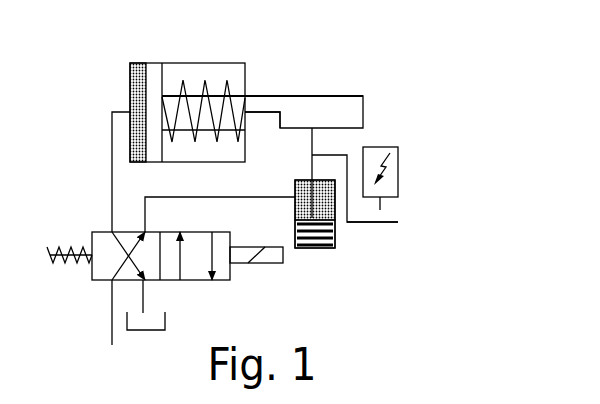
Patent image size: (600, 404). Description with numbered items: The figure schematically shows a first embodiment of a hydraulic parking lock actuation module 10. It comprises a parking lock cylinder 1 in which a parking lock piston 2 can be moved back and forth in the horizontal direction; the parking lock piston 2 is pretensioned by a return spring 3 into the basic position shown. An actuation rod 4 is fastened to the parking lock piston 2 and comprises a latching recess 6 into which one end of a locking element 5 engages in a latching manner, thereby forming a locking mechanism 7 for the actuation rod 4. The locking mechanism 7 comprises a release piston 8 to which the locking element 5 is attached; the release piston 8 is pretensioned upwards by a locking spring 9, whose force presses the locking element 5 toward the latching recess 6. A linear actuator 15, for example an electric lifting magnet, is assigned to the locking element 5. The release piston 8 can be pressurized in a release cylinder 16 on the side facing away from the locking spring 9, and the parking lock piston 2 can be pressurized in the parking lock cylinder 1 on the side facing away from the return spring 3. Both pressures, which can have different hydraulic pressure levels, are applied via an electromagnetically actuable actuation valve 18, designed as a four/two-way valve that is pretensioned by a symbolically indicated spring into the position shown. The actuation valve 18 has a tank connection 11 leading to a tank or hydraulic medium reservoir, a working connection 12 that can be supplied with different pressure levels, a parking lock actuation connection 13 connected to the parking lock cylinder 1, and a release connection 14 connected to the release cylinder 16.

The parking lock cylinder 1 is at (130, 75).
The parking lock piston 2 is at (152, 73).
The return spring 3 is at (205, 78).
The actuation rod 4 is at (327, 96).
The locking element 5 is at (314, 136).
The latching recess 6 is at (262, 117).
The locking mechanism 7 is at (372, 244).
The release piston 8 is at (333, 219).
The locking spring 9 is at (305, 248).
The hydraulic parking lock actuation module 10 is at (445, 68).
The tank connection 11 is at (164, 309).
The working connection 12 is at (111, 329).
The parking lock actuation connection 13 is at (102, 172).
The release connection 14 is at (271, 193).
The linear actuator 15 is at (398, 170).
The release cylinder 16 is at (295, 202).
The actuation valve 18 is at (88, 281).